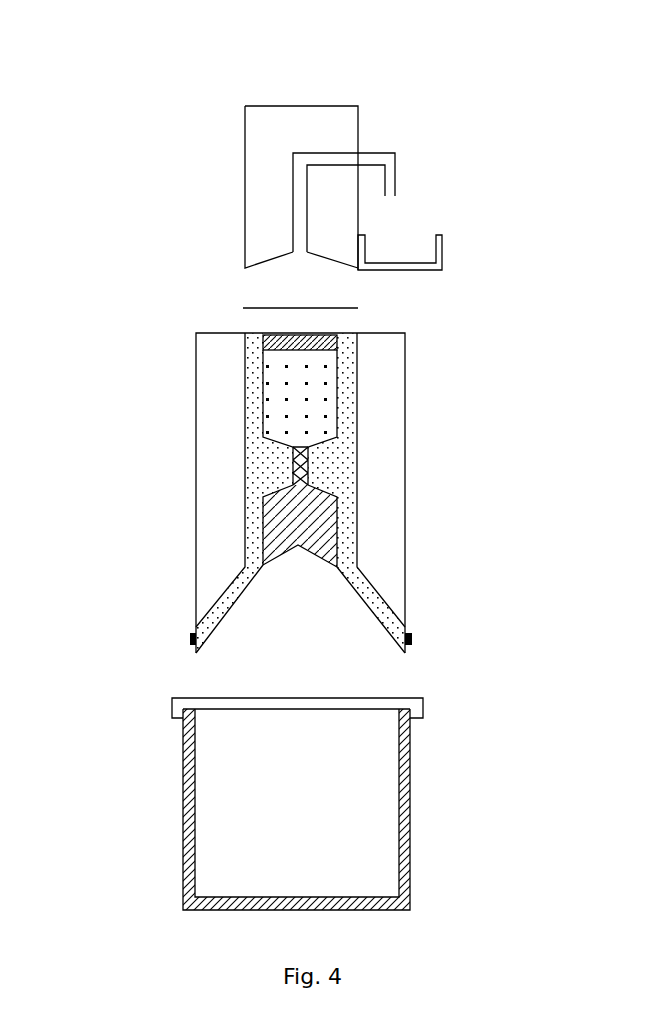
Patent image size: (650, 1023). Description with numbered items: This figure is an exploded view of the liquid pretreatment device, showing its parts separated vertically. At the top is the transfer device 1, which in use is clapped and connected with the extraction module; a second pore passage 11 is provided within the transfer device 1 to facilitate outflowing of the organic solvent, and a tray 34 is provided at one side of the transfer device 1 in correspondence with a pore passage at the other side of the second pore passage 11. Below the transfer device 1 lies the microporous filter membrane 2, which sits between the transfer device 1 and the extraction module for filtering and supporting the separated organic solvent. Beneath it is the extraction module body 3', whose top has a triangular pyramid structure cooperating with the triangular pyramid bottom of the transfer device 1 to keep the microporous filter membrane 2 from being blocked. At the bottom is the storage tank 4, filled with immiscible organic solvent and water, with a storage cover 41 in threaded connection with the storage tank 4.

The transfer device 1 is at (266, 146).
The second pore passage 11 is at (395, 158).
The tray 34 is at (442, 255).
The microporous filter membrane 2 is at (293, 307).
The extraction module body 3' is at (245, 485).
The storage tank 4 is at (193, 800).
The storage cover 41 is at (383, 708).